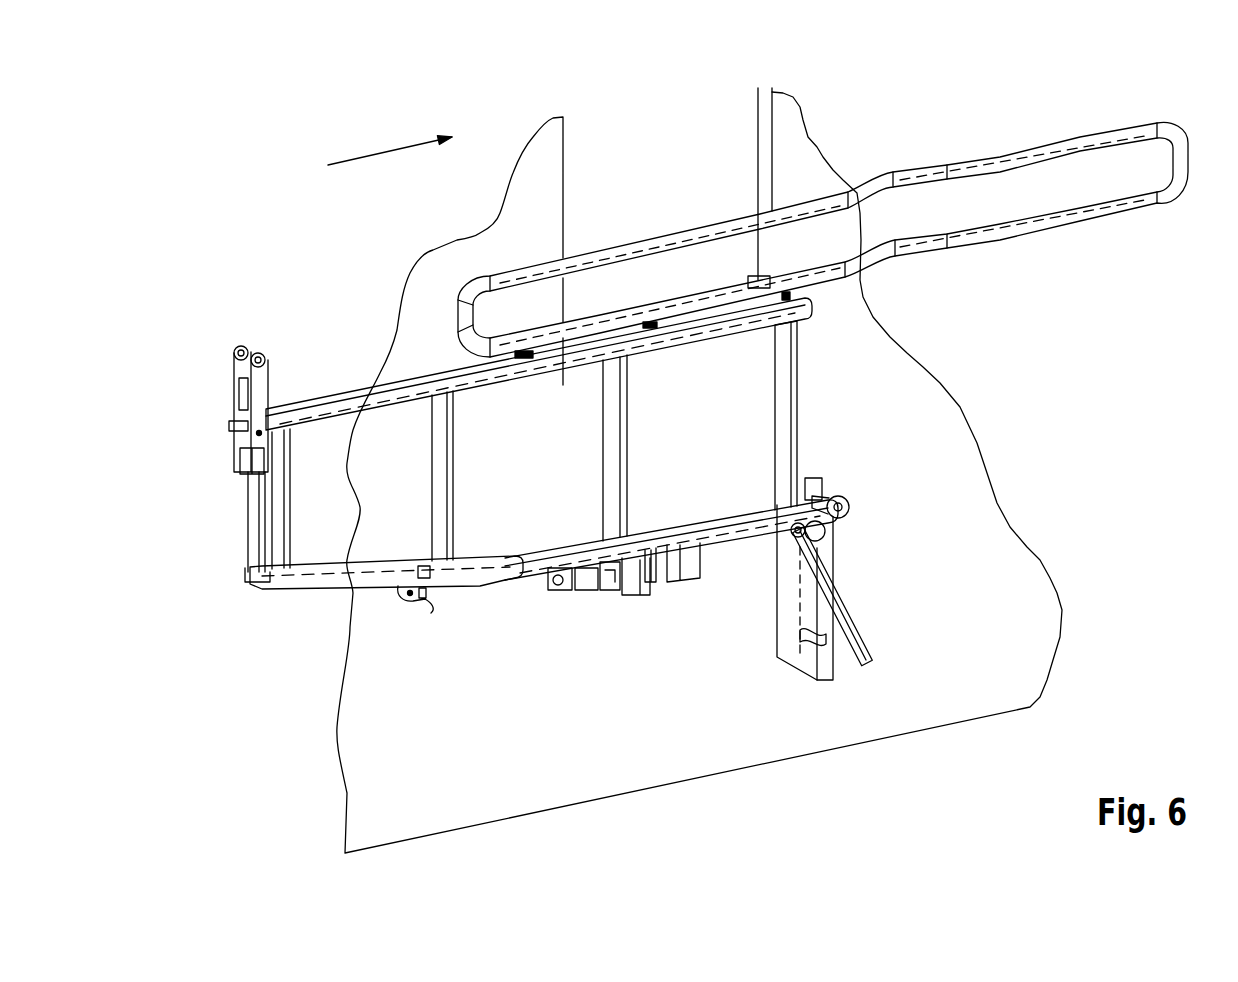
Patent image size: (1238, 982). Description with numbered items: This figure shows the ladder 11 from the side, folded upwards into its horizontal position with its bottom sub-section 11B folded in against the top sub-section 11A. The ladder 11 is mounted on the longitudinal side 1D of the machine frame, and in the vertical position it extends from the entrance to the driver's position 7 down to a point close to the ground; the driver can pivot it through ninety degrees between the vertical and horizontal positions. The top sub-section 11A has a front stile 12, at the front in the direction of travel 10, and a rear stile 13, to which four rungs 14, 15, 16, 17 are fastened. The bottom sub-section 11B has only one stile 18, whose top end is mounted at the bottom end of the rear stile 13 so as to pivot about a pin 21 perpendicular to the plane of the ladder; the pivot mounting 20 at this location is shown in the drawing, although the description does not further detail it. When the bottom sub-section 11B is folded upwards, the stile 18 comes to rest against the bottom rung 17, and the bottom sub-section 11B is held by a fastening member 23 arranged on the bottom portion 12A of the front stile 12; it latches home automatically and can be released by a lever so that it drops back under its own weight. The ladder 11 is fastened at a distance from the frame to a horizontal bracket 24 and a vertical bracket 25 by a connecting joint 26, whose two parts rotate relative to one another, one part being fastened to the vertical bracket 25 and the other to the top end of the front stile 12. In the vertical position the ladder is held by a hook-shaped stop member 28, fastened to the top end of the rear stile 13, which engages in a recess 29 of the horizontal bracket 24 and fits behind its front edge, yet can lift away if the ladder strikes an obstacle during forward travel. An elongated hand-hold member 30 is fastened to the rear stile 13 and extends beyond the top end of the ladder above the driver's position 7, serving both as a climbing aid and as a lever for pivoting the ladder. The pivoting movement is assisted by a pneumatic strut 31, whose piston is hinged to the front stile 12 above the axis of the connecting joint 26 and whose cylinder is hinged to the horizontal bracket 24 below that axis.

The longitudinal side 1D is at (797, 148).
The driver's position 7 is at (680, 128).
The direction of travel 10 is at (376, 157).
The ladder 11 is at (232, 688).
The top sub-section 11A is at (629, 690).
The bottom sub-section 11B is at (170, 547).
The front stile 12 is at (563, 548).
The bottom portion of the front stile 12A is at (481, 557).
The rear stile 13 is at (333, 400).
The rung 14 is at (795, 372).
The rung 15 is at (620, 408).
The rung 16 is at (450, 435).
The bottom rung 17 is at (282, 463).
The stile 18 is at (248, 510).
The latch 20 is at (210, 384).
The pin 21 is at (229, 433).
The fastening member 23 is at (405, 618).
The horizontal bracket 24 is at (697, 568).
The vertical bracket 25 is at (785, 633).
The connecting joint 26 is at (862, 492).
The stop member 28 is at (770, 276).
The recess 29 is at (609, 588).
The hand-hold member 30 is at (1030, 152).
The pneumatic strut 31 is at (870, 610).